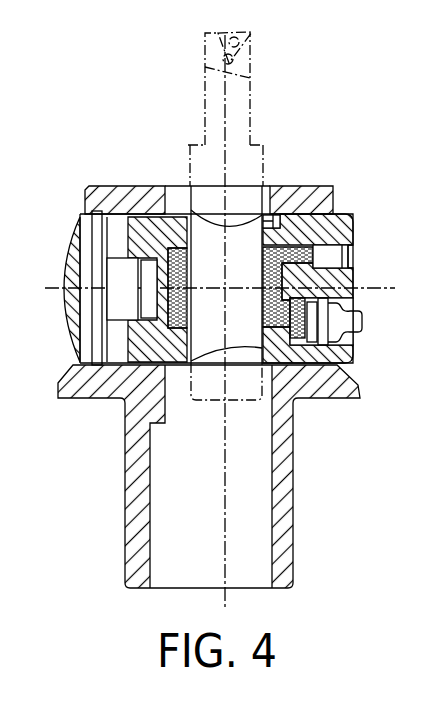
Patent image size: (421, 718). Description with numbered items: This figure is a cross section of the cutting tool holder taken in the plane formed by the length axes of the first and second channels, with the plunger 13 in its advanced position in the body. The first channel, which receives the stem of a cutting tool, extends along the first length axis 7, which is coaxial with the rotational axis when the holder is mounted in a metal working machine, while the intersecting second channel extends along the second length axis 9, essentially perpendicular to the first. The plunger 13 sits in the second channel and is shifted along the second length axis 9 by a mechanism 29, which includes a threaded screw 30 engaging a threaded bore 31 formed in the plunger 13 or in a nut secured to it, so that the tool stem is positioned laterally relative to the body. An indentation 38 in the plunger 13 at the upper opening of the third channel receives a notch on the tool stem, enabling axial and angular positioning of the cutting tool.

The first length axis 7 is at (208, 518).
The second length axis 9 is at (353, 290).
The plunger 13 is at (328, 230).
The mechanism 29 is at (108, 236).
The threaded screw 30 is at (117, 272).
The threaded bore 31 is at (147, 253).
The indentation 38 is at (288, 220).